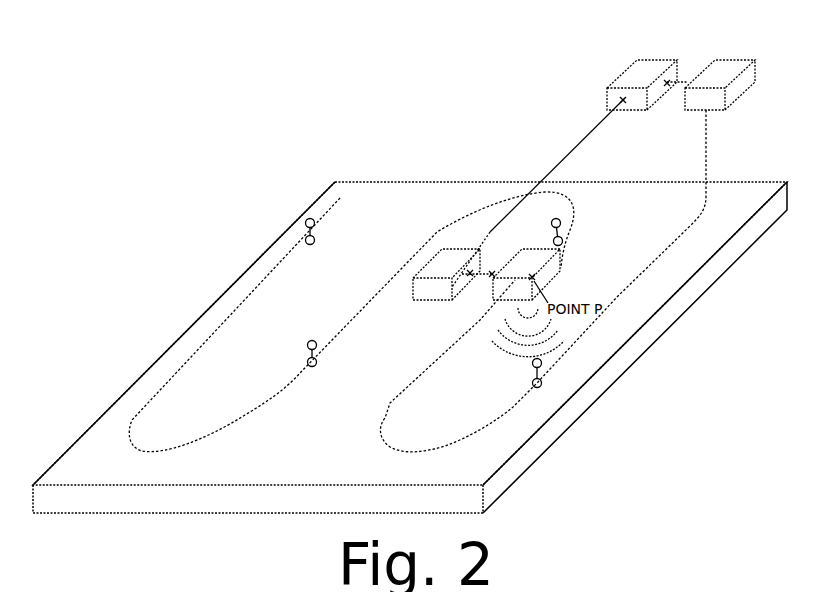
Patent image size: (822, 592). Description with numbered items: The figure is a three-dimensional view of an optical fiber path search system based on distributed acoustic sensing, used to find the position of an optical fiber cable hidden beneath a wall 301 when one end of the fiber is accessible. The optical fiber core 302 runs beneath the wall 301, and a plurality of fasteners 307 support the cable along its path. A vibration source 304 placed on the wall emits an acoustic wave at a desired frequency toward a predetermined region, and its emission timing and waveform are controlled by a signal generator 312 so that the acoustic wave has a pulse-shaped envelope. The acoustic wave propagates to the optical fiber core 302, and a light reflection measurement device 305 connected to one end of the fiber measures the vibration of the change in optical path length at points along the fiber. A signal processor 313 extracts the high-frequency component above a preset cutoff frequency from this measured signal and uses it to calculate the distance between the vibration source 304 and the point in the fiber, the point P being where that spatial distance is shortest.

The wall 301 is at (396, 185).
The optical fiber core 302 is at (570, 206).
The vibration source 304 is at (558, 260).
The light reflection measurement device 305 is at (690, 98).
The fastener 307 is at (314, 336).
The signal generator 312 is at (440, 291).
The signal processor 313 is at (643, 72).